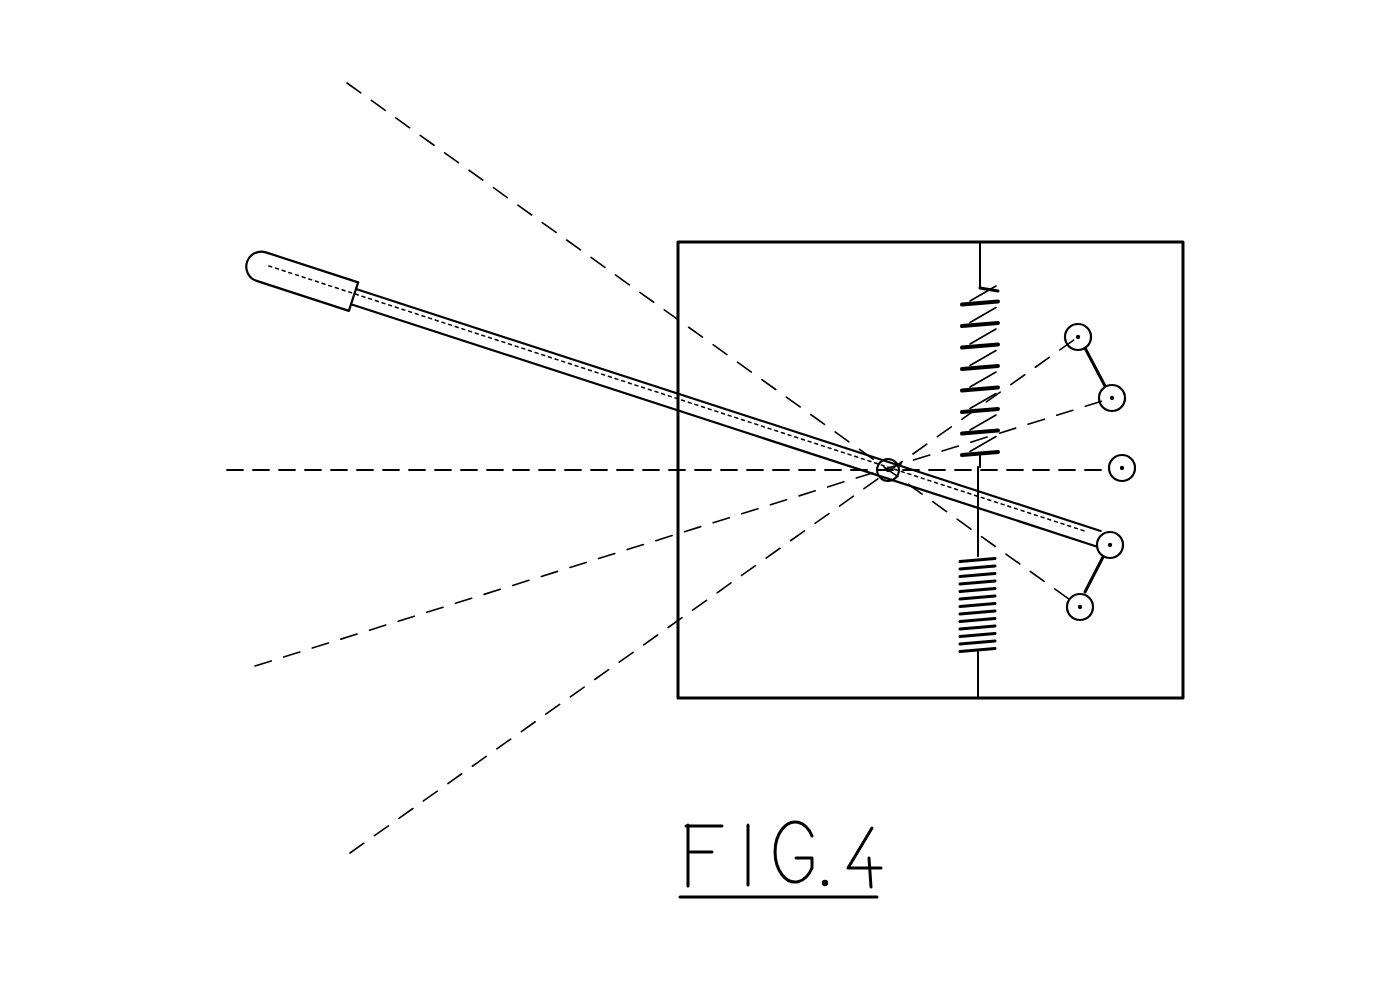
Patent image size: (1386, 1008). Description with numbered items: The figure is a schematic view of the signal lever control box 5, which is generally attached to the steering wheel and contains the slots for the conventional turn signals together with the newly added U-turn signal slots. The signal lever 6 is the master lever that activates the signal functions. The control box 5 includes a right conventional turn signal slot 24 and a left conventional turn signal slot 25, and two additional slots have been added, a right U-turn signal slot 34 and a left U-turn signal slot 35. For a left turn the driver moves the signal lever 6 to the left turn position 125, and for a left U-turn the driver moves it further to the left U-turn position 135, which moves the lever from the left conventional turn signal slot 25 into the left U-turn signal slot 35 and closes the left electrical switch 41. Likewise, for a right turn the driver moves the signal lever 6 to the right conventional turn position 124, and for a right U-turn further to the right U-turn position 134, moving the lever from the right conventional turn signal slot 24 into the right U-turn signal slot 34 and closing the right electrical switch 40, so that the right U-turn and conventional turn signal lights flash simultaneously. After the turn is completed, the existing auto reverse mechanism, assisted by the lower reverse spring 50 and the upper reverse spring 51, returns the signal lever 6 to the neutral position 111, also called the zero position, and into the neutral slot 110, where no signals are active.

The signal lever control box 5 is at (930, 394).
The signal lever 6 is at (435, 307).
The right conventional turn signal slot 24 is at (1126, 545).
The left conventional turn signal slot 25 is at (1127, 398).
The right U-turn signal slot 34 is at (1098, 615).
The left U-turn signal slot 35 is at (1093, 330).
The right electrical switch 40 is at (1105, 580).
The left electrical switch 41 is at (1103, 370).
The lower reverse spring 50 is at (955, 608).
The upper reverse spring 51 is at (950, 323).
The neutral slot 110 is at (1136, 468).
The neutral position 111 is at (622, 462).
The right conventional turn position 124 is at (613, 378).
The left turn position 125 is at (633, 546).
The right U-turn position 134 is at (653, 323).
The left U-turn position 135 is at (658, 611).